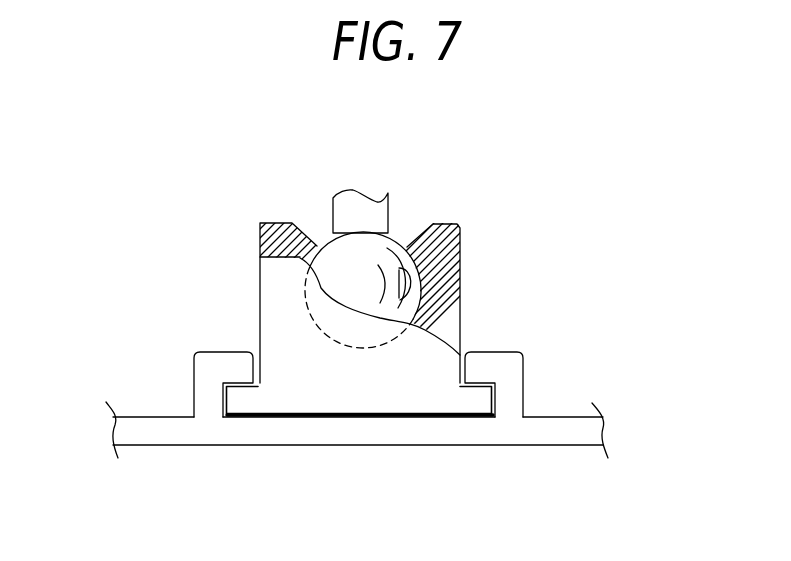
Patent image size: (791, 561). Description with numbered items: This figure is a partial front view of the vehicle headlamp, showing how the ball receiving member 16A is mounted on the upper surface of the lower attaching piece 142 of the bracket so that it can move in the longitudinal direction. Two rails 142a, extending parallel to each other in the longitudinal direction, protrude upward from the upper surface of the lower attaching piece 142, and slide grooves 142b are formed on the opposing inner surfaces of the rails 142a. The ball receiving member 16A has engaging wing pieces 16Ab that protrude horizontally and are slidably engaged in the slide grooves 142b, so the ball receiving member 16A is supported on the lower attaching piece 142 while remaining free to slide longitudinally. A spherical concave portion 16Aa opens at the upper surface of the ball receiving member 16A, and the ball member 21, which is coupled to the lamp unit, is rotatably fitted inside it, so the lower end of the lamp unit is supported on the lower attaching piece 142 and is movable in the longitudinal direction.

The ball member 21 is at (352, 268).
The ball receiving member 16A is at (457, 223).
The spherical concave portion 16Aa is at (410, 293).
The engaging wing pieces 16Ab is at (240, 393).
The lower attaching piece 142 is at (362, 432).
The rails 142a is at (203, 352).
The slide grooves 142b is at (228, 403).